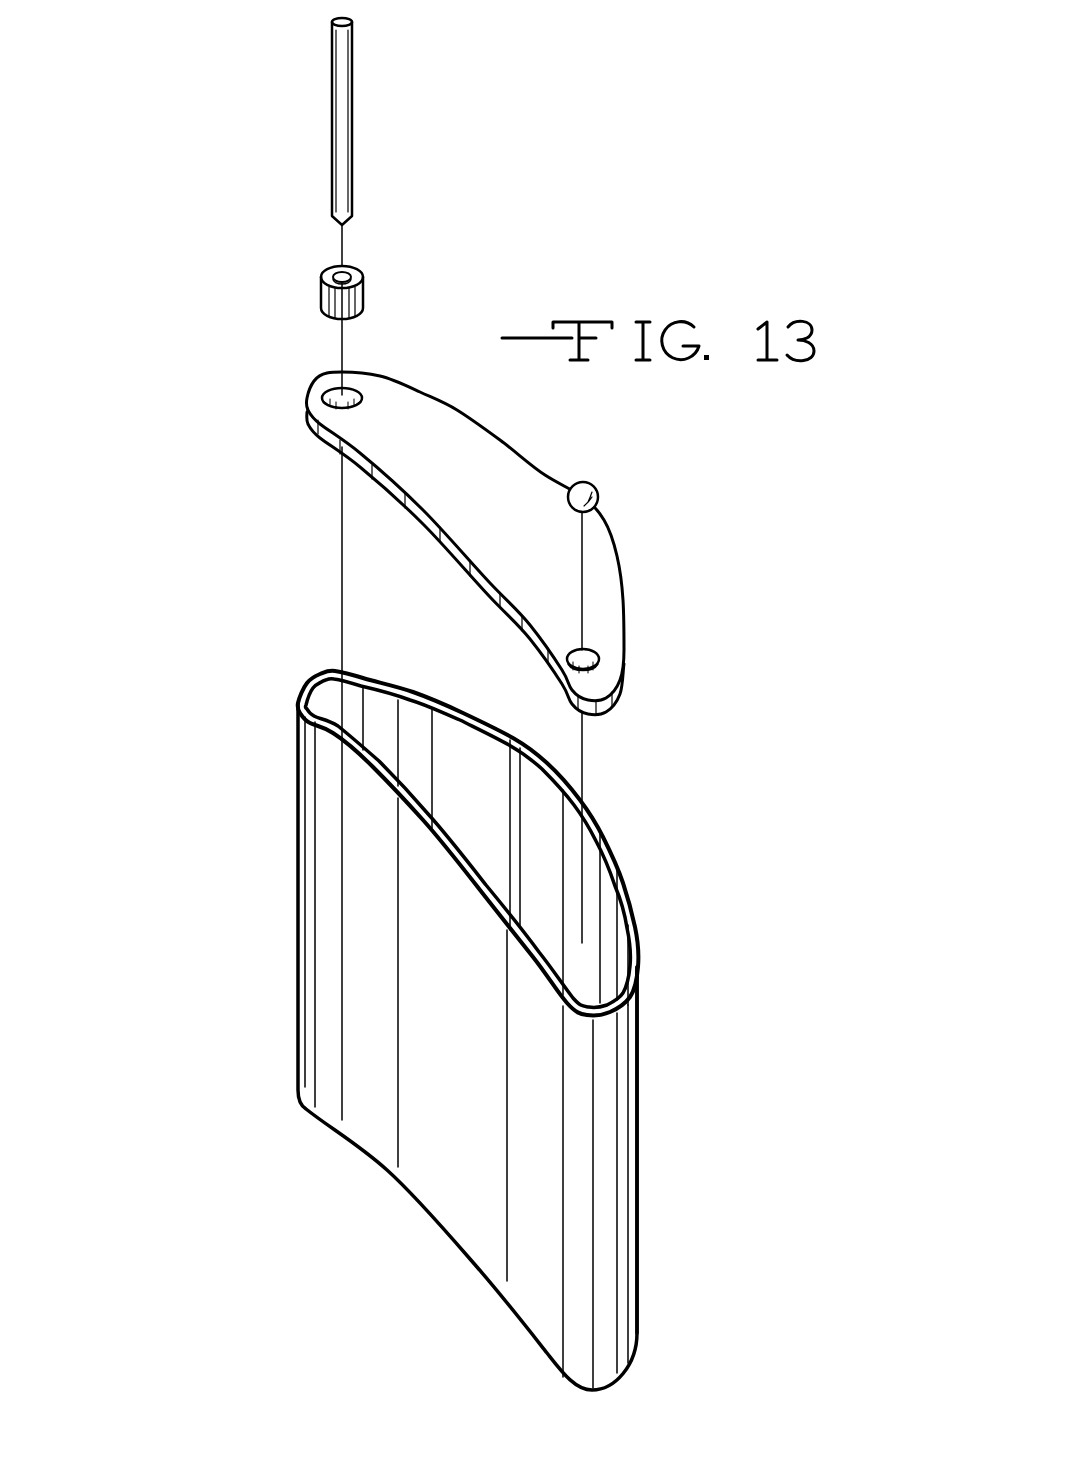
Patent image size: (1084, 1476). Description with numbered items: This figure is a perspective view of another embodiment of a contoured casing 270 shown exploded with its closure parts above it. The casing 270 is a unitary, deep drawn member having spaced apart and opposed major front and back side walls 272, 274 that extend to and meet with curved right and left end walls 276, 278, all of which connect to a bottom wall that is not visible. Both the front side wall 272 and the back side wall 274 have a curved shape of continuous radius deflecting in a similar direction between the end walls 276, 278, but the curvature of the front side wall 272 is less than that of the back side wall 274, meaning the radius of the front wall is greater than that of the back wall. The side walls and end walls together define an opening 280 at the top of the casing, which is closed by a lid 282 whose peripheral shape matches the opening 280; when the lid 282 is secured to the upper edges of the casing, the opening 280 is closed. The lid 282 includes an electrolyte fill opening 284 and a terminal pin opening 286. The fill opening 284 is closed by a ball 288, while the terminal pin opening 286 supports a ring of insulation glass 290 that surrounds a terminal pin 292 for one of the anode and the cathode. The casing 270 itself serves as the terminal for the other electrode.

The contoured casing 270 is at (703, 549).
The front side wall 272 is at (423, 1140).
The back side wall 274 is at (613, 860).
The right end wall 276 is at (607, 1047).
The left end wall 278 is at (298, 870).
The opening 280 is at (538, 823).
The lid 282 is at (492, 457).
The electrolyte fill opening 284 is at (593, 657).
The terminal pin opening 286 is at (358, 393).
The ball 288 is at (598, 484).
The ring of insulation glass 290 is at (362, 283).
The terminal pin 292 is at (348, 113).